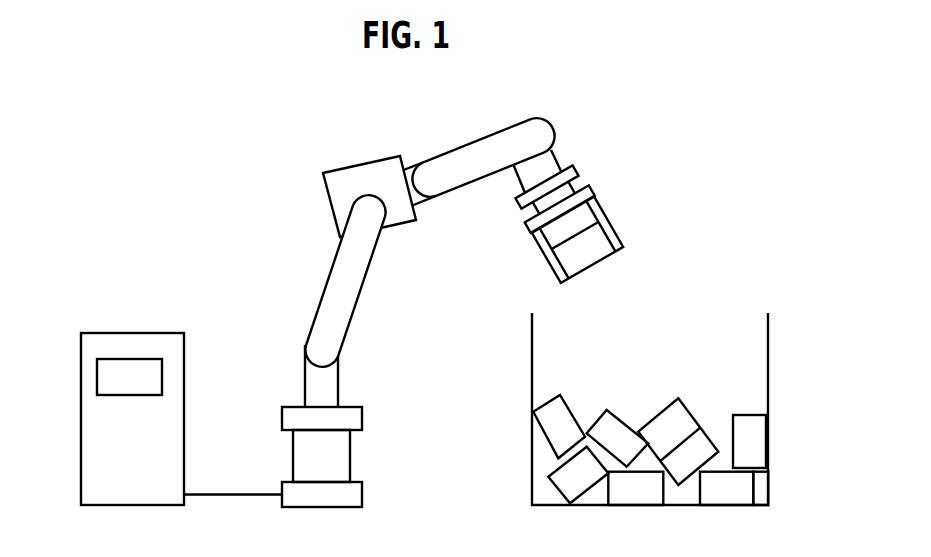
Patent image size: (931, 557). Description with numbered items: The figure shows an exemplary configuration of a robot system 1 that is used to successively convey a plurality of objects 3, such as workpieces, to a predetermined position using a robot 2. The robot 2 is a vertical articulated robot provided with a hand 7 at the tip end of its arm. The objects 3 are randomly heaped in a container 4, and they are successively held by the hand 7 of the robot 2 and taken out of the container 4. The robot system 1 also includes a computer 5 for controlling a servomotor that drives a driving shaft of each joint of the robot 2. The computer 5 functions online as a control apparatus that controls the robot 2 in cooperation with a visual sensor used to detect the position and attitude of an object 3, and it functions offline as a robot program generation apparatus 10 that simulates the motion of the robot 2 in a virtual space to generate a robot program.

The robot system 1 is at (116, 104).
The robot 2 is at (340, 147).
The object 3 is at (603, 263).
The container 4 is at (769, 395).
The computer 5 is at (125, 333).
The robot program generation apparatus 10 is at (129, 377).
The hand 7 is at (611, 210).